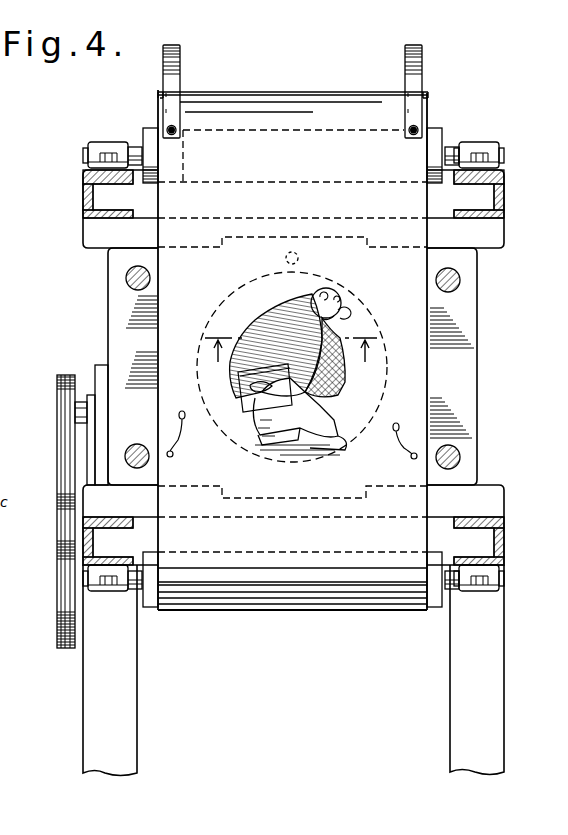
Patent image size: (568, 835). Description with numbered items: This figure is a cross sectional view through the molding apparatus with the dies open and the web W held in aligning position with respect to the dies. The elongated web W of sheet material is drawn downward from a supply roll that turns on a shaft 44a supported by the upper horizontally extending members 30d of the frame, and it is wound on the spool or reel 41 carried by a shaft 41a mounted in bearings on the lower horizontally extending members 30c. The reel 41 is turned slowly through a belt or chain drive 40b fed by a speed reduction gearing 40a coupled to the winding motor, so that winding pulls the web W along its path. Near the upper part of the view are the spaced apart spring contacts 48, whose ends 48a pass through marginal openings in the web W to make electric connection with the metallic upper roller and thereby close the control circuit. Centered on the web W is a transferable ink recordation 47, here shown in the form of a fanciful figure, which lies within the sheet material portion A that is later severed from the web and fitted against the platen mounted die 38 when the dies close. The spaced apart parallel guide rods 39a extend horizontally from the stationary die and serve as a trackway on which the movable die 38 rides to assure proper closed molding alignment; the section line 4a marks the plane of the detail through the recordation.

The spring contacts 48 is at (181, 50).
The ends of spring contacts 48a is at (170, 118).
The shaft 44a is at (447, 155).
The upper horizontally extending members 30d is at (85, 184).
The lower horizontally extending members 30c is at (90, 543).
The guide rods 39a is at (125, 274).
The ink recordation 47 is at (292, 300).
The platen mounted die 38 is at (382, 328).
The sheet material portion A is at (262, 305).
The web W is at (403, 305).
The section line 4a is at (290, 359).
The speed reduction gearing 40a is at (98, 368).
The belt or chain drive 40b is at (63, 457).
The spool or reel 41 is at (152, 600).
The shaft 41a is at (140, 553).